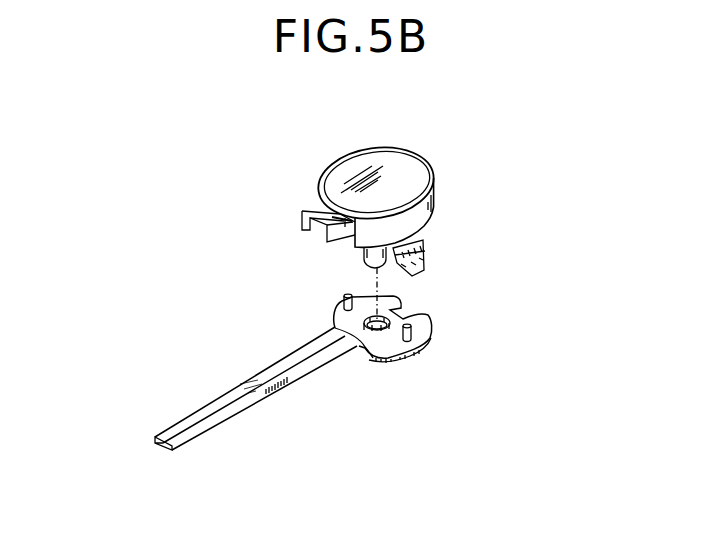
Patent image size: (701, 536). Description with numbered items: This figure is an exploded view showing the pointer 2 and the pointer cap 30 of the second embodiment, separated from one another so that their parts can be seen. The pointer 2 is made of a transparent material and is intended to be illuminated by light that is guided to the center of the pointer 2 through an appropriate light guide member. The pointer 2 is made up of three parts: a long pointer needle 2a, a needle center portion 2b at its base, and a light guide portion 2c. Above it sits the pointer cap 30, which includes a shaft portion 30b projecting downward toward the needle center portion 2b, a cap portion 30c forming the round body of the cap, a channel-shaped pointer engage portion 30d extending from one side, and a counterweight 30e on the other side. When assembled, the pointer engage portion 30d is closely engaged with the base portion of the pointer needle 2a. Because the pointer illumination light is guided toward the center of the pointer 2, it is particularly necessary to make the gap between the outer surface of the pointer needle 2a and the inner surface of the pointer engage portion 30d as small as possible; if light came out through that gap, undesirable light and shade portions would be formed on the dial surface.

The pointer 2 is at (321, 377).
The pointer needle 2a is at (232, 400).
The needle center portion 2b is at (395, 342).
The light guide portion 2c is at (400, 301).
The pointer cap 30 is at (395, 148).
The shaft portion 30b is at (364, 257).
The cap portion 30c is at (433, 203).
The pointer engage portion 30d is at (319, 206).
The counterweight 30e is at (428, 252).